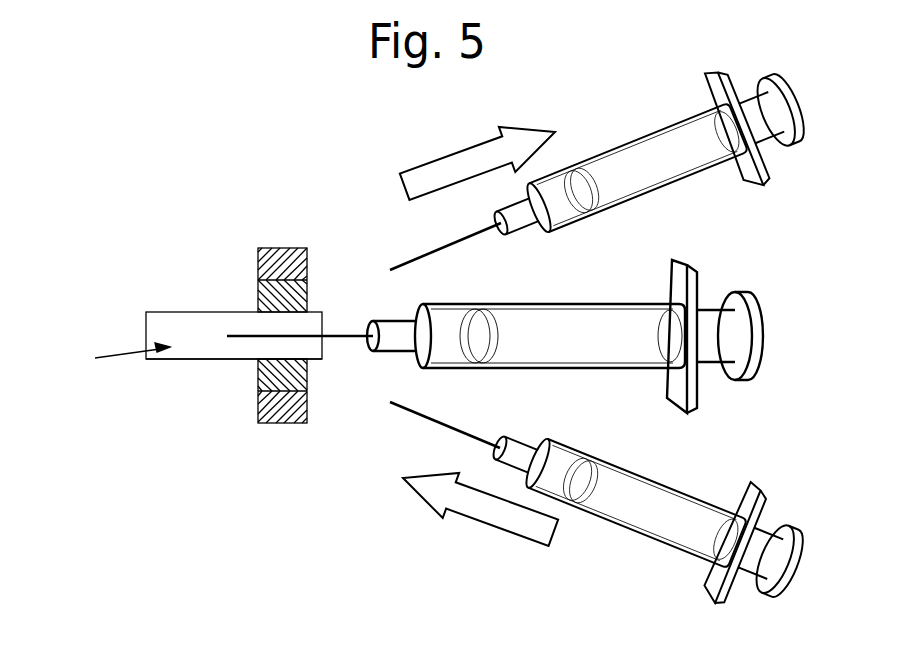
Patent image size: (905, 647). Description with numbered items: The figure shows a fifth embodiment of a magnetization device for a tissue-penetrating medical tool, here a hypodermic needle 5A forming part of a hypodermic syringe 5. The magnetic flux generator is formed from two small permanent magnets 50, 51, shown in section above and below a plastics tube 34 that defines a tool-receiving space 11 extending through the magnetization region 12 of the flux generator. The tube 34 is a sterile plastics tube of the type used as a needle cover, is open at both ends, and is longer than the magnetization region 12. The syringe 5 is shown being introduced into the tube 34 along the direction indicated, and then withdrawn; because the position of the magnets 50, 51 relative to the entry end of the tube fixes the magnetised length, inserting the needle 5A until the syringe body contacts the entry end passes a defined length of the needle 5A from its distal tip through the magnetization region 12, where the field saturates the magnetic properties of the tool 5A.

The hypodermic syringe 5 is at (580, 303).
The hypodermic needle 5A is at (348, 336).
The tool-receiving space 11 is at (117, 360).
The magnetization region 12 is at (247, 357).
The sterile plastics tube 34 is at (195, 348).
The permanent magnet 50 is at (283, 423).
The permanent magnet 51 is at (258, 257).